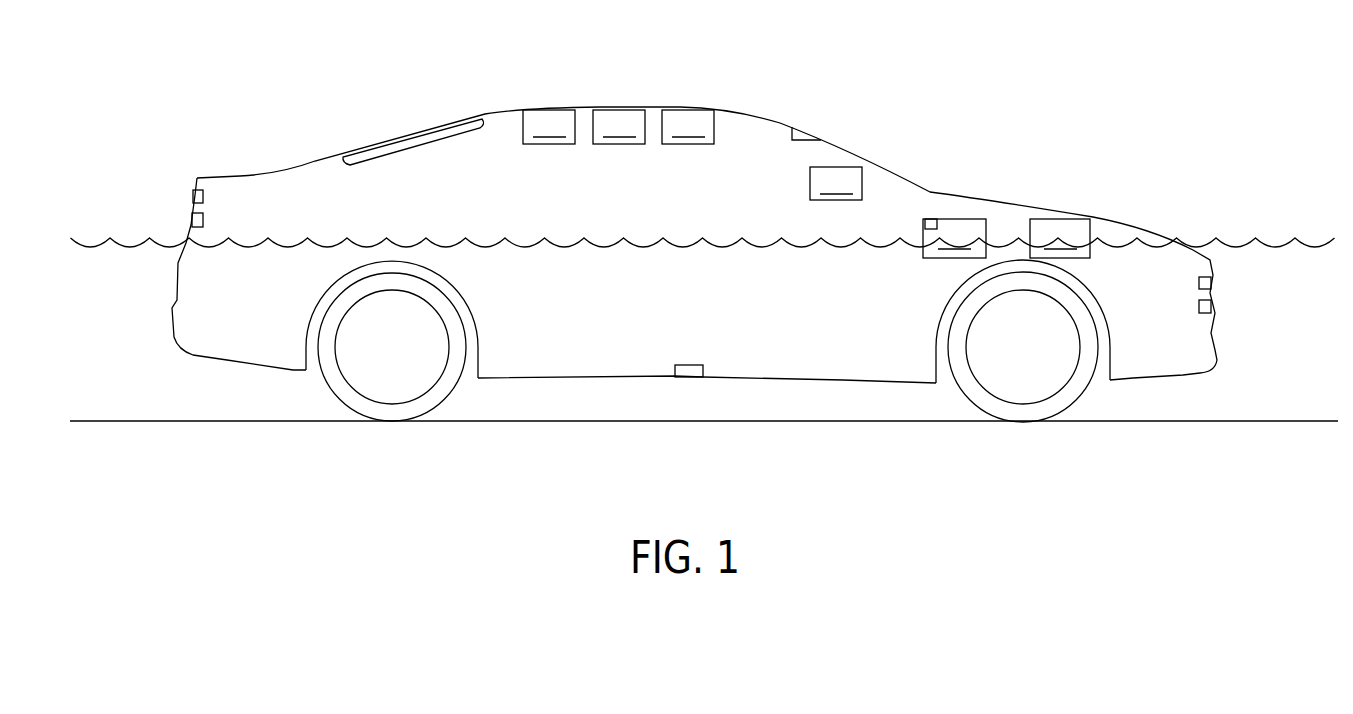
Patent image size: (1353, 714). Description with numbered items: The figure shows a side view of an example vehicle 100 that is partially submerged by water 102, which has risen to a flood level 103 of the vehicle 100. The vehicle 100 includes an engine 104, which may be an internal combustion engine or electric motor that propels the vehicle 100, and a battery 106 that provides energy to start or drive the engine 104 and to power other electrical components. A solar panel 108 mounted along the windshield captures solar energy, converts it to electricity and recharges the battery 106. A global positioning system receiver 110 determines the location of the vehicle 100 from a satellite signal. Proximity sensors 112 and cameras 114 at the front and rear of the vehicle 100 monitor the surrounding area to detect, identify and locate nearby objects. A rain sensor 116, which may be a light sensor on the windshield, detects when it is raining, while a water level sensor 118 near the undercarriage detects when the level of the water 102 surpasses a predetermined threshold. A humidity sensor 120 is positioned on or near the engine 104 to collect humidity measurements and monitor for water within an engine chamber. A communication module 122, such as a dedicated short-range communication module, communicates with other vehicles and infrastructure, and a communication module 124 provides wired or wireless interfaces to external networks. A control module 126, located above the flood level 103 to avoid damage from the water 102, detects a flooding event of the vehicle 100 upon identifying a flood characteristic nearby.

The vehicle 100 is at (234, 176).
The water 102 is at (1270, 398).
The flood level 103 is at (1278, 247).
The engine 104 is at (954, 238).
The battery 106 is at (1060, 238).
The solar panel 108 is at (410, 138).
The global positioning system (GPS) receiver 110 is at (836, 183).
The proximity sensors 112 is at (196, 197).
The cameras 114 is at (194, 220).
The rain sensor 116 is at (803, 129).
The water level sensor 118 is at (690, 378).
The humidity sensor 120 is at (930, 220).
The communication module 122 is at (549, 127).
The communication module 124 is at (688, 127).
The control module 126 is at (619, 127).